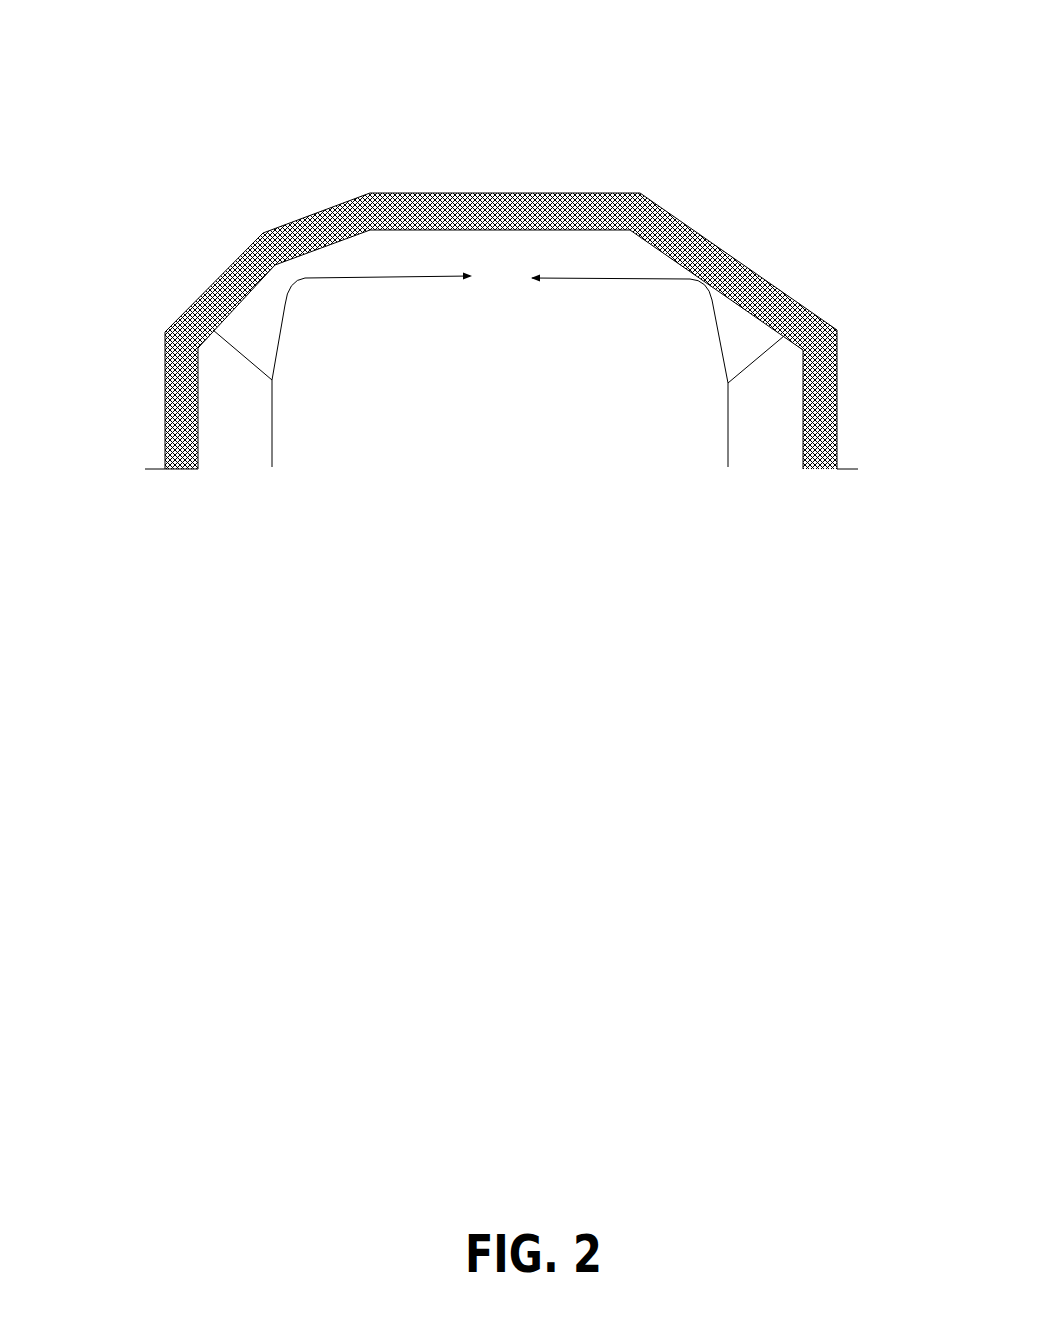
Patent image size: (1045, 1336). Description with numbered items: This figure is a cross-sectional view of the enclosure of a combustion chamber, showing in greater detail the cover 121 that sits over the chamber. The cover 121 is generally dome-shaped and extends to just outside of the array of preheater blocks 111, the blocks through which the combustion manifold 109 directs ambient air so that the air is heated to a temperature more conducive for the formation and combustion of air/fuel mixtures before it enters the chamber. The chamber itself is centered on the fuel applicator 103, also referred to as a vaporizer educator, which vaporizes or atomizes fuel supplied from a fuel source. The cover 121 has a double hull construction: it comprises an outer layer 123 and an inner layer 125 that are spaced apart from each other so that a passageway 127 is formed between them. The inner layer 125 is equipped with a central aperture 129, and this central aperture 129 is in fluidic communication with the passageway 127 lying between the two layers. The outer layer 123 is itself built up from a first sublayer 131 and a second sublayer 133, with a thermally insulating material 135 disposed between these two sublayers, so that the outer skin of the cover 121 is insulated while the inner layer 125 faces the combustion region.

The cover 121 is at (140, 64).
The outer layer 123 is at (407, 184).
The preheater blocks 111 is at (712, 231).
The combustion manifold 109 is at (794, 433).
The fuel applicator 103 is at (197, 303).
The thermally insulating material 135 is at (173, 373).
The first sublayer 131 is at (165, 428).
The second sublayer 133 is at (197, 455).
The inner layer 125 is at (296, 334).
The central aperture 129 is at (502, 292).
The passageway 127 is at (437, 268).